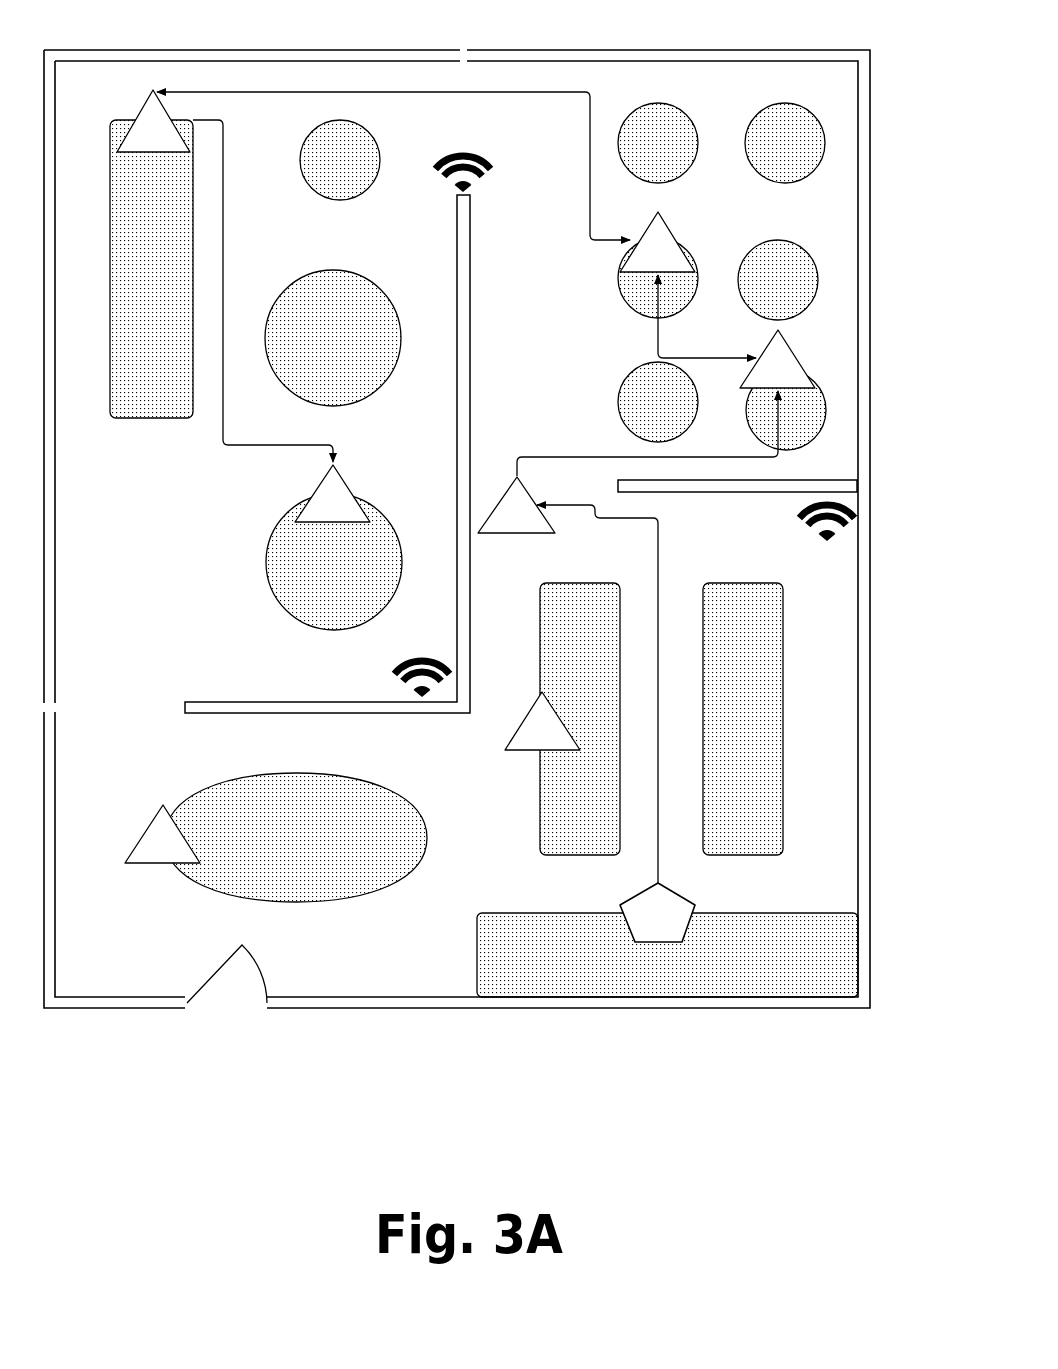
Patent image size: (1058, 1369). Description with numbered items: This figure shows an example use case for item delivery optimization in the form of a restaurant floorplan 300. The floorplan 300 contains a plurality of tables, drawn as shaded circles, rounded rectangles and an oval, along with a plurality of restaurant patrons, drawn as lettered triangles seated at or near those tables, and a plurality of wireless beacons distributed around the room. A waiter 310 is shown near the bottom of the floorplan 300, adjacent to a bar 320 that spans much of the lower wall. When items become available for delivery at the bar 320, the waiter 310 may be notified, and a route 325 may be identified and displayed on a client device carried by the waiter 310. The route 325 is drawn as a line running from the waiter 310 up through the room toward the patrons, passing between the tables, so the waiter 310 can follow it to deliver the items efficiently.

The restaurant floorplan 300 is at (457, 505).
The waiter 310 is at (657, 912).
The bar 320 is at (667, 955).
The route 325 is at (664, 573).